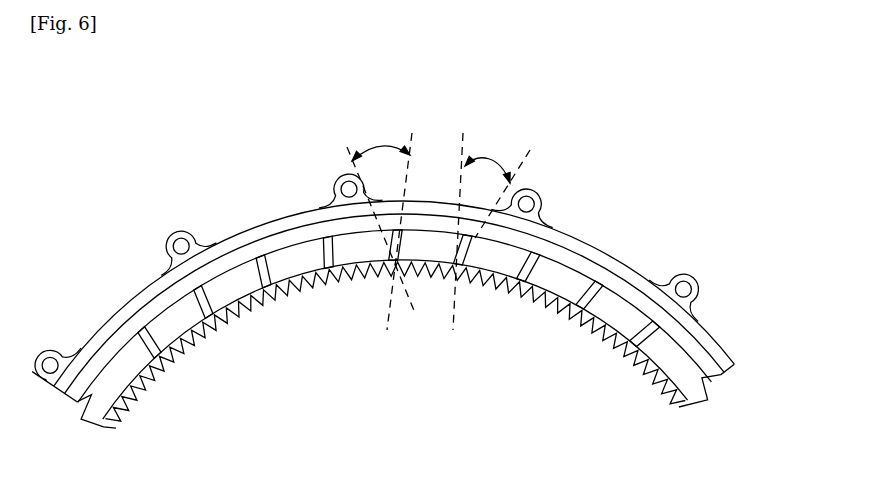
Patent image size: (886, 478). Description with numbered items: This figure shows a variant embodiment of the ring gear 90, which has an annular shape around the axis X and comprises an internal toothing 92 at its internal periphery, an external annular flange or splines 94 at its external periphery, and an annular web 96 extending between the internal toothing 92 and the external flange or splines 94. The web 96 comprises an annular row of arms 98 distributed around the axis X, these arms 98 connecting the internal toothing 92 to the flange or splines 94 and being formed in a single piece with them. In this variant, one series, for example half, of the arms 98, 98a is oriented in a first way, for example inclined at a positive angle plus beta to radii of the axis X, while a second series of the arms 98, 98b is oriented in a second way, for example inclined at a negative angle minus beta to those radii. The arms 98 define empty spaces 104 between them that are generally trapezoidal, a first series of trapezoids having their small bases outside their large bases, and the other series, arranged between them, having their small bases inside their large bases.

The ring gear 90 is at (738, 138).
The internal toothing 92 is at (626, 362).
The external annular flange or splines 94 is at (693, 273).
The annular web 96 is at (555, 277).
The arms 98 is at (399, 221).
The arms of the first series 98a is at (200, 308).
The arms of the second series 98b is at (397, 235).
The empty spaces 104 is at (232, 300).